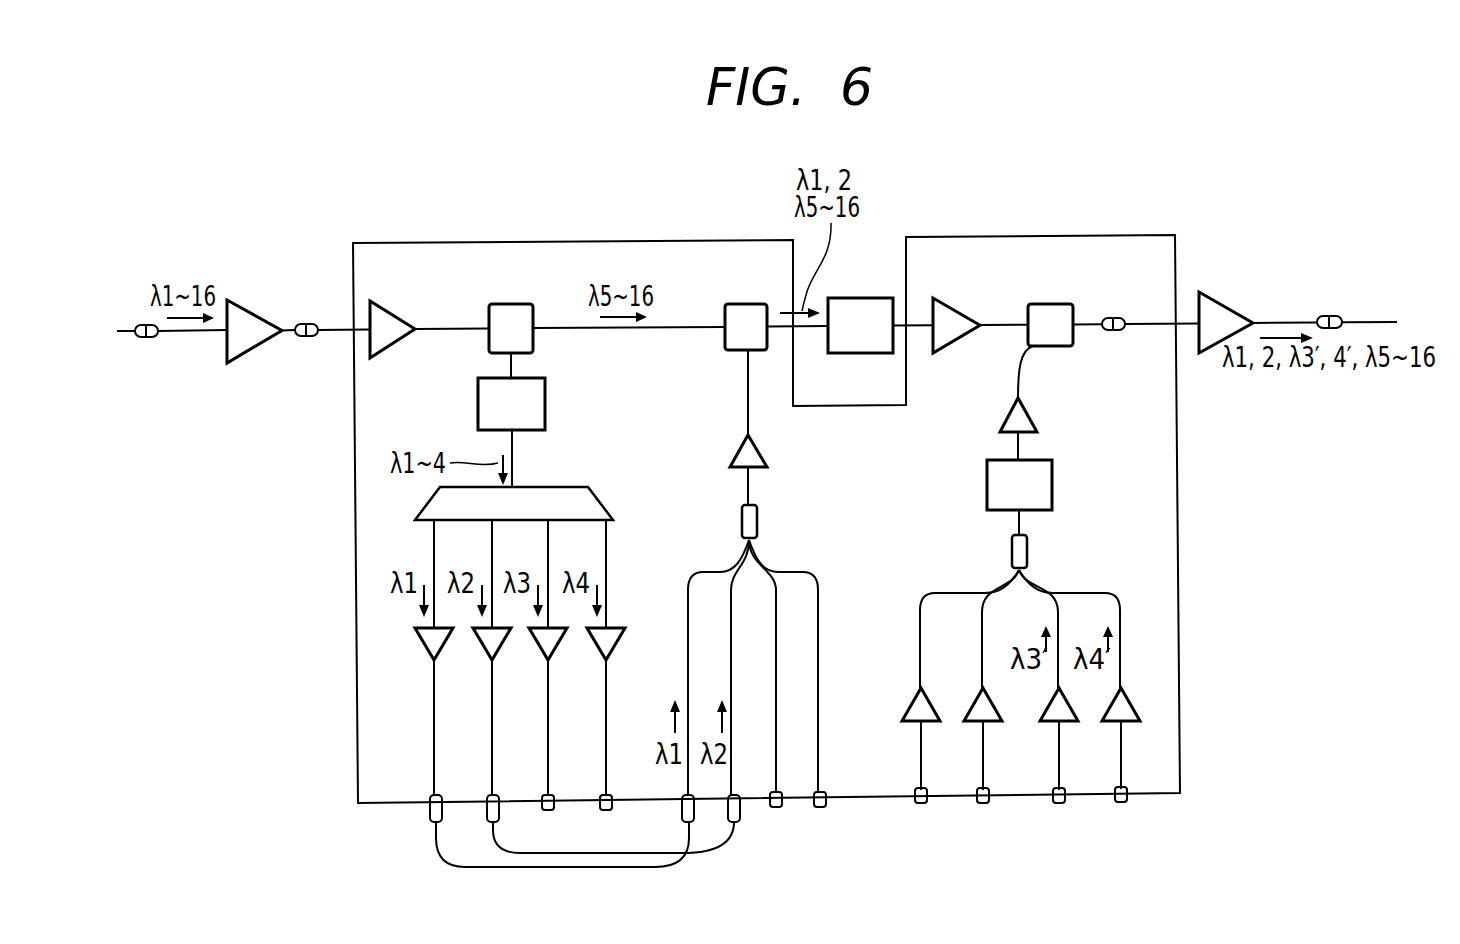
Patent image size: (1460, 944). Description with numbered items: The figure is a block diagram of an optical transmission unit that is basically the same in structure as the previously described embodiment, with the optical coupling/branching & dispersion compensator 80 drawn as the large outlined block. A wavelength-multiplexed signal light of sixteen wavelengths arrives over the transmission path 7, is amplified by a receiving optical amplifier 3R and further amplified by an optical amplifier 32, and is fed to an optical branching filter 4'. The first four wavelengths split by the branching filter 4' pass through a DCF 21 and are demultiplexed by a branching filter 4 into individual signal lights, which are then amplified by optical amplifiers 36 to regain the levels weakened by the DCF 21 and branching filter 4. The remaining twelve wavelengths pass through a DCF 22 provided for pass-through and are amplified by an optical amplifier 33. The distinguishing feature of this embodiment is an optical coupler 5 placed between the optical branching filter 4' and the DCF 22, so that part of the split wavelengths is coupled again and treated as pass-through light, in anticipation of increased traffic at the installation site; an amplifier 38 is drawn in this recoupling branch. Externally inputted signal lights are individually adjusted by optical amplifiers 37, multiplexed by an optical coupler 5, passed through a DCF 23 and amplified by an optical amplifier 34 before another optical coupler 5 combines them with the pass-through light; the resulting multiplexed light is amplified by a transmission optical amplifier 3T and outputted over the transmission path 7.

The transmission path 7 is at (124, 331).
The receiving optical amplifier 3R is at (255, 313).
The optical amplifier 32 is at (394, 309).
The optical branching filter 4' is at (504, 301).
The optical coupler 5 is at (733, 304).
The DCF 21 is at (546, 390).
The DCF 22 is at (876, 298).
The optical amplifier 33 is at (957, 306).
The transmission optical amplifier 3T is at (1229, 306).
The optical branching filter 4 is at (529, 475).
The optical amplifiers 36 is at (446, 652).
The optical amplifier 38 is at (765, 452).
The optical amplifier 34 is at (1030, 415).
The DCF 23 is at (1053, 472).
The optical amplifiers 37 is at (930, 724).
The optical coupling/branching & dispersion compensator 80 is at (1181, 623).